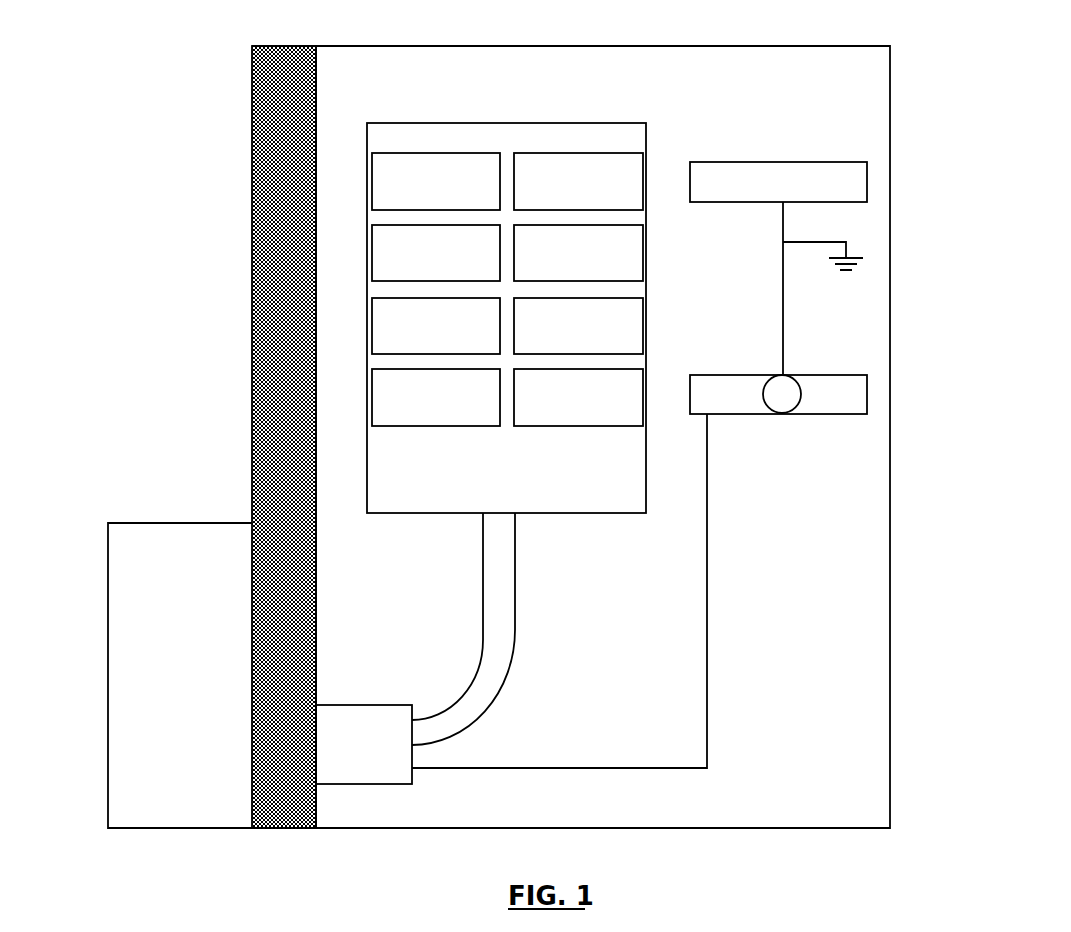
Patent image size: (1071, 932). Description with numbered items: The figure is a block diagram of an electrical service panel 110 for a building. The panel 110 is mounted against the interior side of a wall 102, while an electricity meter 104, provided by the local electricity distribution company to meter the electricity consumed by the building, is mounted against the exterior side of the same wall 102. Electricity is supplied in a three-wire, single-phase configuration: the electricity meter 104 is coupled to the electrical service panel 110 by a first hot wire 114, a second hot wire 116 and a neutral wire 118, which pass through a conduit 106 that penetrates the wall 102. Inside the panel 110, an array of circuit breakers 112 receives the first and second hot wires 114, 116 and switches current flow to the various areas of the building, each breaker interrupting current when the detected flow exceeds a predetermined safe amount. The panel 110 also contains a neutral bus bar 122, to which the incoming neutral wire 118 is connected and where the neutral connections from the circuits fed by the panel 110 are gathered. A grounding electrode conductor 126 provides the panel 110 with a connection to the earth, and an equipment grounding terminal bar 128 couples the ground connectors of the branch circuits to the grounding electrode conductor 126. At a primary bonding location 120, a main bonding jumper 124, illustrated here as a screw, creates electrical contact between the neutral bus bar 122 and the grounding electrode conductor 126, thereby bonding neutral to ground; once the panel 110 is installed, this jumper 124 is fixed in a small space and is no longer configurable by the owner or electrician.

The wall 102 is at (275, 45).
The electricity meter 104 is at (117, 523).
The conduit 106 is at (316, 705).
The electrical service panel 110 is at (848, 46).
The array of circuit breakers 112 is at (602, 153).
The first hot wire 114 is at (483, 590).
The second hot wire 116 is at (515, 643).
The neutral wire 118 is at (707, 677).
The primary bonding location 120 is at (825, 269).
The neutral bus bar 122 is at (847, 372).
The main bonding jumper 124 is at (782, 394).
The grounding electrode conductor 126 is at (846, 242).
The equipment grounding terminal bar 128 is at (845, 162).